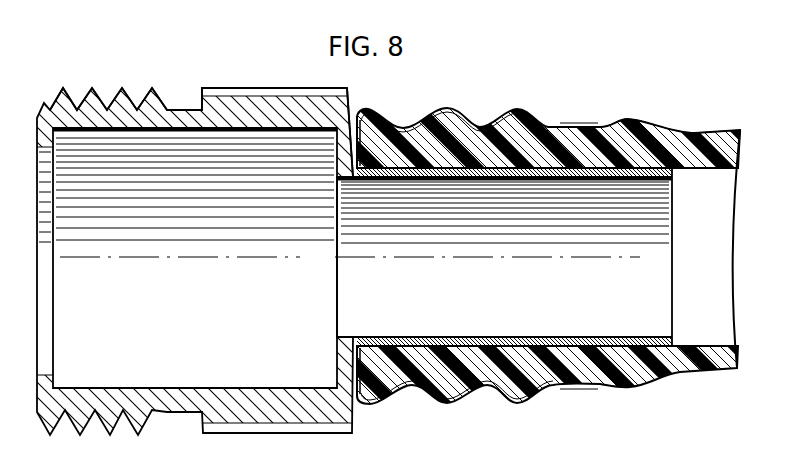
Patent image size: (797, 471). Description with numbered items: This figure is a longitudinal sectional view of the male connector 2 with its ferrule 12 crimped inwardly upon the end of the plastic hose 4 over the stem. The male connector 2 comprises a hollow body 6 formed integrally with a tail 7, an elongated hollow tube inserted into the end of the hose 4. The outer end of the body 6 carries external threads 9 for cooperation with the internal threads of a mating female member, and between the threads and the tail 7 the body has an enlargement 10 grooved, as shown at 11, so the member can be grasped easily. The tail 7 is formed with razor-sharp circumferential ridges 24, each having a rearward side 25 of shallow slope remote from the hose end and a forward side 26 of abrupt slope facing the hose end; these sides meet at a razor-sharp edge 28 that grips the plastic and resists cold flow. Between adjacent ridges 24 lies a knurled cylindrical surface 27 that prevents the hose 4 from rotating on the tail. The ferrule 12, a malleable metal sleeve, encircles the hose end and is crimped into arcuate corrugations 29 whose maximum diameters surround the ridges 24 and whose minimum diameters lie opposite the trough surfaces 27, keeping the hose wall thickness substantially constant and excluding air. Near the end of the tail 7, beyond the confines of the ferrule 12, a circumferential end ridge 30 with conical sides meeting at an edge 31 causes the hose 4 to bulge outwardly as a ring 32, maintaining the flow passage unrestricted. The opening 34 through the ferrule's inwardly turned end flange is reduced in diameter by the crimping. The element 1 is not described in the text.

The hose coupling 1 is at (355, 92).
The male connector 2 is at (164, 84).
The hose 4 is at (702, 130).
The hollow body 6 is at (207, 90).
The tail 7 is at (658, 273).
The external threads 9 is at (128, 88).
The enlargement 10 is at (238, 89).
The grooves 11 is at (257, 428).
The ferrule 12 is at (451, 110).
The circumferential ridges 24 is at (469, 163).
The rearward side 25 is at (538, 160).
The forward side 26 is at (447, 178).
The cylindrical surface 27 is at (498, 178).
The razor-sharp edge 28 is at (448, 385).
The corrugations 29 is at (438, 109).
The circumferential end ridge 30 is at (636, 157).
The edge 31 is at (613, 143).
The circumferential bulge 32 is at (629, 385).
The opening 34 is at (354, 357).